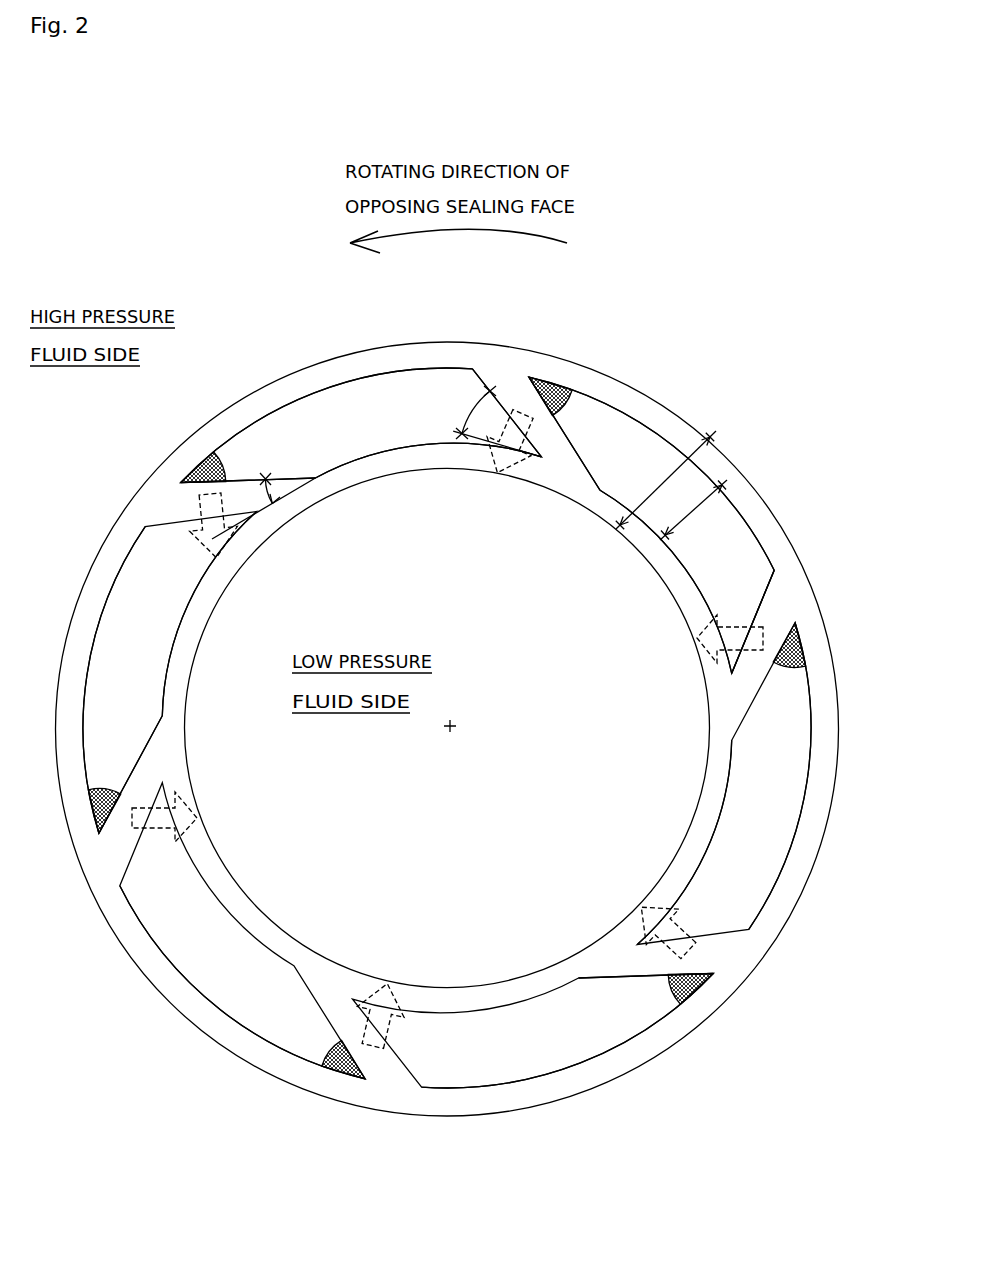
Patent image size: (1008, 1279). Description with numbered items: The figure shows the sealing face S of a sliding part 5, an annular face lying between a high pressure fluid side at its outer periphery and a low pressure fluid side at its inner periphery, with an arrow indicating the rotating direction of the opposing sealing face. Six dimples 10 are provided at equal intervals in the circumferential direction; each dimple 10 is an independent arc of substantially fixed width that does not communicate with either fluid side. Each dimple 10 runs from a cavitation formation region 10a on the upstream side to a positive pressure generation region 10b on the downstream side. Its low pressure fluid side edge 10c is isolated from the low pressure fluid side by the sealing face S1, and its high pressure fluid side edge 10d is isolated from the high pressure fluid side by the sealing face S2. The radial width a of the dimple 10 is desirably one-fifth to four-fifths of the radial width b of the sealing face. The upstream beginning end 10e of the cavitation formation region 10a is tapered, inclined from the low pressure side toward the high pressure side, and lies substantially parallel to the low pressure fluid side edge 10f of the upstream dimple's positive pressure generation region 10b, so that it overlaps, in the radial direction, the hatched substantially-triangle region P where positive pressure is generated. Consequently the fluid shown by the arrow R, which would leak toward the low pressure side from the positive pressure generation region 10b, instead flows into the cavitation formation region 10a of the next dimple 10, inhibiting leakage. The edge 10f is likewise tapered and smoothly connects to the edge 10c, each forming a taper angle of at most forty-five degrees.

The sealing face 5 is at (327, 359).
The dimple 10 is at (391, 360).
The cavitation formation region 10a is at (437, 430).
The positive pressure generation region 10b is at (247, 460).
The low pressure fluid side edge 10c is at (357, 463).
The high pressure fluid side edge 10d is at (313, 393).
The upstream beginning end 10e is at (496, 383).
The low pressure fluid side edge of positive pressure generation region 10f is at (547, 427).
The hatched substantially-triangle region P is at (187, 477).
The arrow R is at (216, 555).
The sealing face S is at (815, 615).
The sealing face S1 is at (417, 462).
The sealing face S2 is at (257, 402).
The radial width of the dimple a is at (693, 510).
The radial width of the sealing face b is at (666, 480).